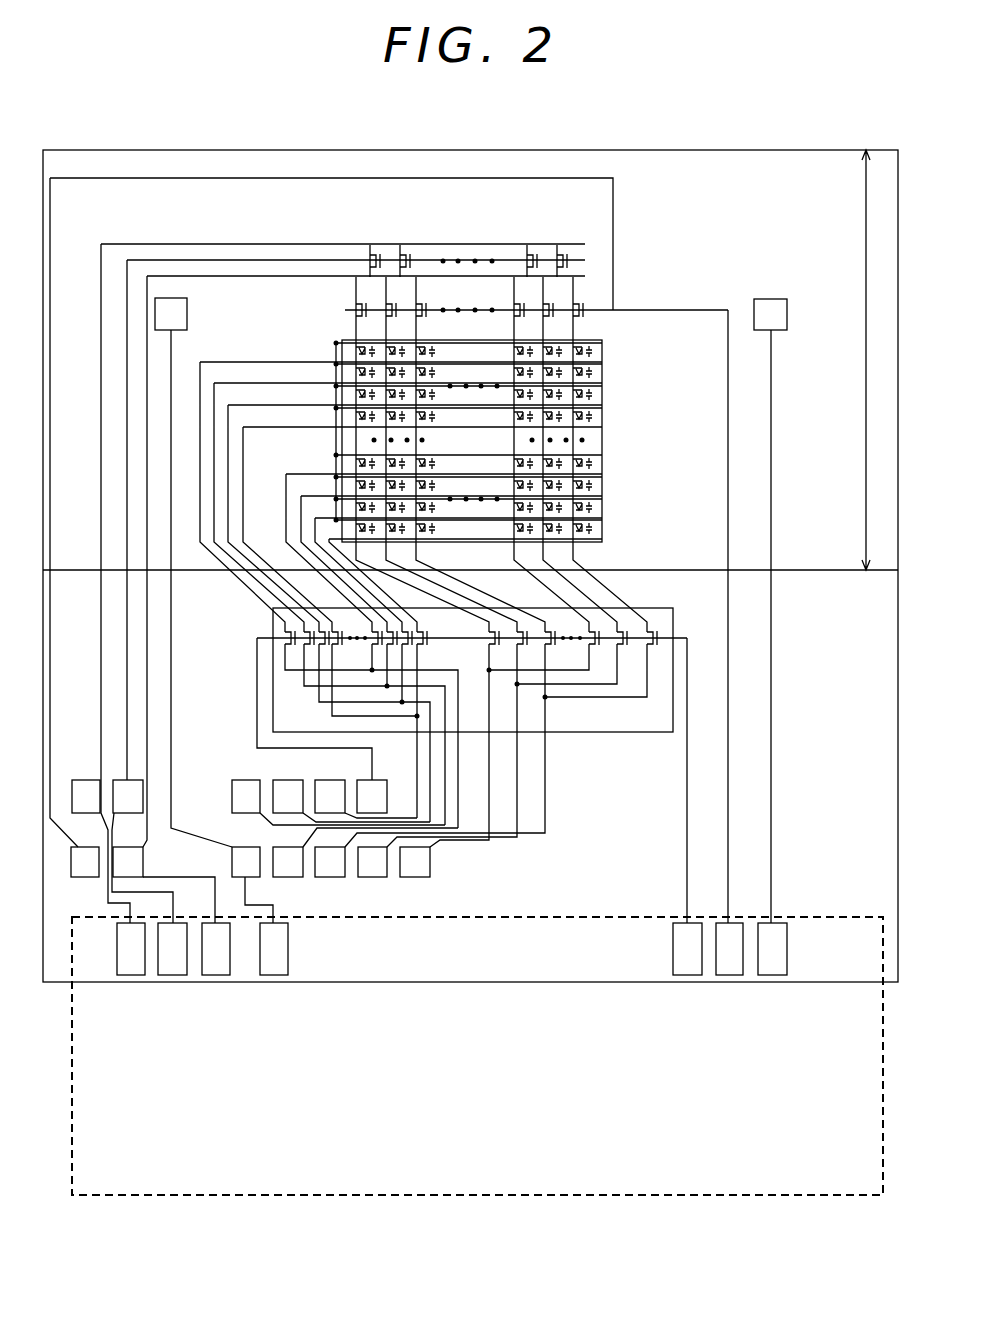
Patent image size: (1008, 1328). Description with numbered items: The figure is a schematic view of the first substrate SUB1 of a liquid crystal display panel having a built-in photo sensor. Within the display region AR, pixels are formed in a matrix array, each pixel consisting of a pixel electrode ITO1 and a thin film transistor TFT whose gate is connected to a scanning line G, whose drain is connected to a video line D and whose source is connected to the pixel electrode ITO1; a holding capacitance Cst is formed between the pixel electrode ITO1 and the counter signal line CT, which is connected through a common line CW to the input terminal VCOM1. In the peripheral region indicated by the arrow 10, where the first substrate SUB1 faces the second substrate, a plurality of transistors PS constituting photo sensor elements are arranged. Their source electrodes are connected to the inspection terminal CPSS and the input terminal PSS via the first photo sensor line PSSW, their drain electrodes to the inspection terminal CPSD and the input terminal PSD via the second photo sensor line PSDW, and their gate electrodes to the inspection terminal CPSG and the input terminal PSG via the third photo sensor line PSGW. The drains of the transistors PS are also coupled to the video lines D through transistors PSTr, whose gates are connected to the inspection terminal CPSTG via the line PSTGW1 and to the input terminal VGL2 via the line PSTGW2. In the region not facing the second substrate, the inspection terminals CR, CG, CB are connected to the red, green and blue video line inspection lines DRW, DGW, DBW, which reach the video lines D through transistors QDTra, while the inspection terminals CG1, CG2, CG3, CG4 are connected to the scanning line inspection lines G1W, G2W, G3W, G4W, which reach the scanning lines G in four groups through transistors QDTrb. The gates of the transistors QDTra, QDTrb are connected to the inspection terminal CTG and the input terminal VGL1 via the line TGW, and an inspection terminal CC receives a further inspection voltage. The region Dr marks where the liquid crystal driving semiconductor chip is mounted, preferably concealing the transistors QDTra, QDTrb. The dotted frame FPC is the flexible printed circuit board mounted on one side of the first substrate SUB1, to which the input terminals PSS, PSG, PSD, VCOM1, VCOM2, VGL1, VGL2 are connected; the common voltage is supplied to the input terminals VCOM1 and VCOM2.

The first substrate SUB1 is at (735, 150).
The region where the first substrate and second substrate face each other 10 is at (856, 360).
The line PSTGW1 is at (100, 180).
The first photo sensor line PSSW is at (106, 245).
The third photo sensor line PSGW is at (188, 259).
The second photo sensor line PSDW is at (268, 275).
The transistor PS is at (568, 237).
The transistor PSTr is at (514, 303).
The line PSTGW2 is at (727, 498).
The video line D is at (423, 555).
The scanning line G is at (256, 360).
The display region AR is at (600, 360).
The pixel electrode ITO1 is at (611, 400).
The thin film transistor TFT is at (606, 431).
The holding capacitance Cst is at (611, 481).
The counter signal line CT is at (610, 524).
The transistor QDTrb is at (284, 627).
The transistor QDTra is at (668, 630).
The scanning line inspection line G4W is at (460, 752).
The scanning line inspection line G3W is at (447, 764).
The scanning line inspection line G2W is at (432, 778).
The scanning line inspection line G1W is at (419, 792).
The blue video line inspection line DBW is at (547, 838).
The green video line inspection line DGW is at (519, 843).
The red video line inspection line DRW is at (491, 846).
The semiconductor chip Dr is at (637, 733).
The line TGW is at (256, 676).
The common line CW is at (173, 660).
The inspection terminal CPSS is at (82, 782).
The inspection terminal CPSG is at (142, 793).
The inspection terminal CPSD is at (143, 860).
The inspection terminal CPSTG is at (76, 865).
The inspection terminal CG2 is at (246, 796).
The inspection terminal CG3 is at (288, 796).
The inspection terminal CG4 is at (330, 796).
The inspection terminal CTG is at (372, 796).
The inspection terminal CC is at (252, 885).
The inspection terminal CG1 is at (288, 862).
The inspection terminal CR is at (330, 862).
The inspection terminal CG is at (372, 862).
The inspection terminal CB is at (415, 862).
The input terminal PSS is at (131, 949).
The input terminal PSG is at (172, 949).
The input terminal PSD is at (216, 949).
The input terminal VCOM1 is at (274, 949).
The input terminal VGL1 is at (687, 806).
The input terminal VGL2 is at (729, 949).
The input terminal VCOM2 is at (770, 637).
The flexible printed circuit board FPC is at (221, 1196).